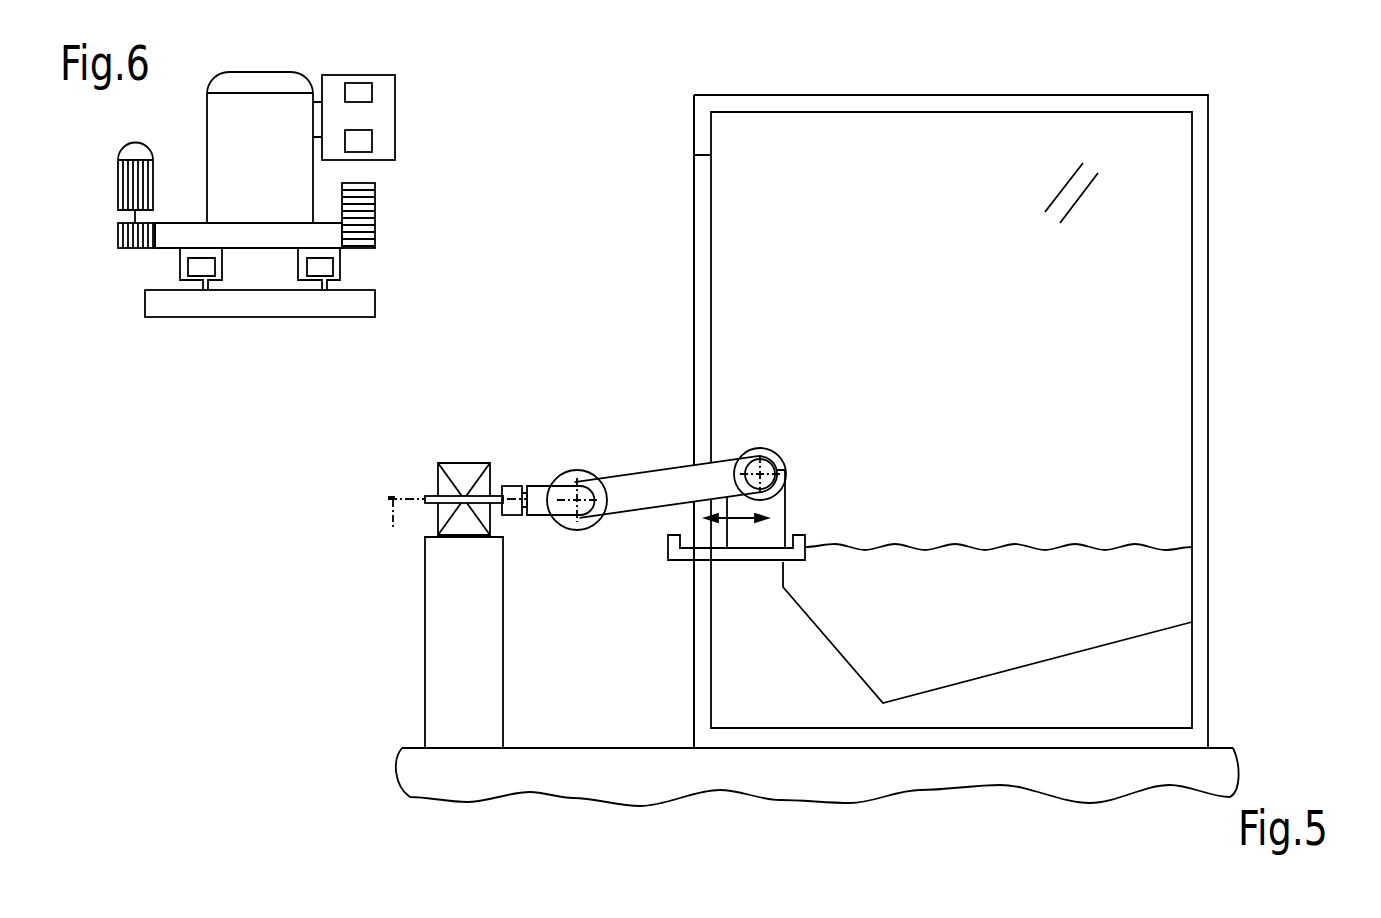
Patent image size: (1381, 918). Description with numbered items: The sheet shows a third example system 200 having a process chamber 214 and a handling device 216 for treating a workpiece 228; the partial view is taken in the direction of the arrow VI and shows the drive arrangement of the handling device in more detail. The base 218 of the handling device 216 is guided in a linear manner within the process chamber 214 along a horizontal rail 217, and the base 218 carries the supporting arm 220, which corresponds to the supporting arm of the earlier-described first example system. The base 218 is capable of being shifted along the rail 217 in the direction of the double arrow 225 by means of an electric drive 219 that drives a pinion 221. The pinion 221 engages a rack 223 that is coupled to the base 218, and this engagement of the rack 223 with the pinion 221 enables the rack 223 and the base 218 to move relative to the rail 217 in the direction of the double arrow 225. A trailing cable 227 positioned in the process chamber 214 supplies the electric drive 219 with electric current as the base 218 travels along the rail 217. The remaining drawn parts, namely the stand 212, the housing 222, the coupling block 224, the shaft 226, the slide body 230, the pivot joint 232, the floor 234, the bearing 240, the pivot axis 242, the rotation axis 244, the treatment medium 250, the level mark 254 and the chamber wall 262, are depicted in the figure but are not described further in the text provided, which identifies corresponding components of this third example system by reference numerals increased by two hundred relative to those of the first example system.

In FIG. 5, the third example system 200 is at (1022, 390).
In FIG. 5, the stand 212 is at (442, 717).
In FIG. 5, the process chamber 214 is at (977, 103).
In FIG. 5, the handling device 216 is at (686, 475).
In FIG. 6, the horizontal rail 217 is at (366, 300).
In FIG. 5, the horizontal rail 217 is at (760, 560).
In FIG. 6, the base 218 is at (212, 127).
In FIG. 5, the base 218 is at (762, 527).
In FIG. 6, the electric drive 219 is at (118, 182).
In FIG. 5, the supporting arm 220 is at (670, 477).
In FIG. 6, the pinion 221 is at (118, 237).
In FIG. 5, the drive shaft housing 222 is at (540, 486).
In FIG. 6, the rack 223 is at (162, 250).
In FIG. 5, the coupling block 224 is at (512, 516).
In FIG. 5, the double arrow 225 is at (735, 522).
In FIG. 5, the shaft 226 is at (432, 495).
In FIG. 6, the trailing cable 227 is at (376, 213).
In FIG. 5, the workpiece 228 is at (464, 462).
In FIG. 5, the slide body 230 is at (786, 481).
In FIG. 5, the pivot joint 232 is at (585, 478).
In FIG. 5, the floor 234 is at (567, 748).
In FIG. 5, the bearing 240 is at (777, 457).
In FIG. 5, the pivot axis 242 is at (598, 521).
In FIG. 5, the rotation axis 244 is at (443, 537).
In FIG. 5, the treatment medium 250 is at (1168, 594).
In FIG. 5, the level mark 254 is at (1099, 176).
In FIG. 5, the tank wall 262 is at (720, 241).